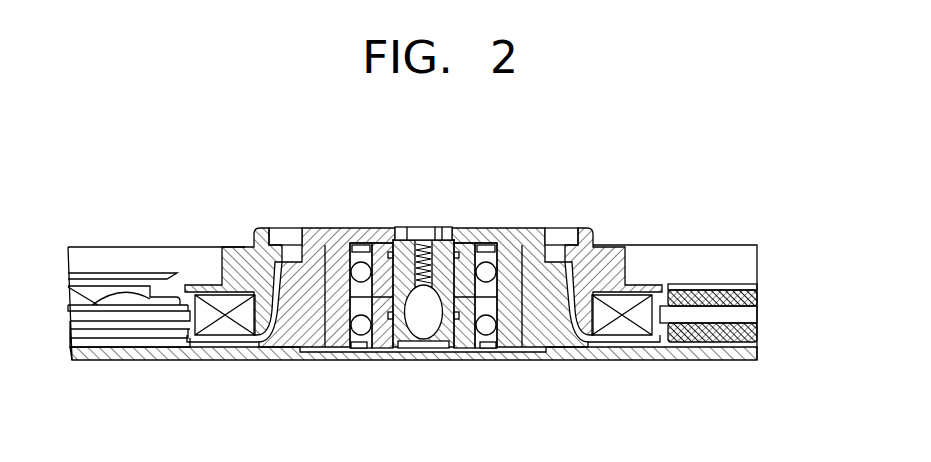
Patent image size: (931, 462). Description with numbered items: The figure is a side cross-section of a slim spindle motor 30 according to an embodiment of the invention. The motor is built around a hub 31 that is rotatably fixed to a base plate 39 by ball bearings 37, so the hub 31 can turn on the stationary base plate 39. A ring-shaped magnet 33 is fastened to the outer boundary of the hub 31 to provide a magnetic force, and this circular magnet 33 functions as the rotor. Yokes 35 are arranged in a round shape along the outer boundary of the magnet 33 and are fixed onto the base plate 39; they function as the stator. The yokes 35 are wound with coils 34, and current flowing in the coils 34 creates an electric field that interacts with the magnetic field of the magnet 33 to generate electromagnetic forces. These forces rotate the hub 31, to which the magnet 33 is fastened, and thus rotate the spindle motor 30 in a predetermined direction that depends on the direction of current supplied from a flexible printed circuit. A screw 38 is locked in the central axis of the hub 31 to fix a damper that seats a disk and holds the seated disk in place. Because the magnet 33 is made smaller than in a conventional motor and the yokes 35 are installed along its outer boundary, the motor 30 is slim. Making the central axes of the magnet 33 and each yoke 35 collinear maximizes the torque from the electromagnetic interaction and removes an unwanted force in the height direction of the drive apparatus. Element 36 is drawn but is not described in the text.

The slim spindle motor 30 is at (455, 271).
The hub 31 is at (610, 247).
The ring-shaped magnet 33 is at (623, 323).
The coils 34 is at (750, 312).
The yokes 35 is at (751, 304).
The magnet 36 is at (748, 297).
The ball bearings 37 is at (489, 330).
The screw 38 is at (423, 236).
The base plate 39 is at (586, 358).